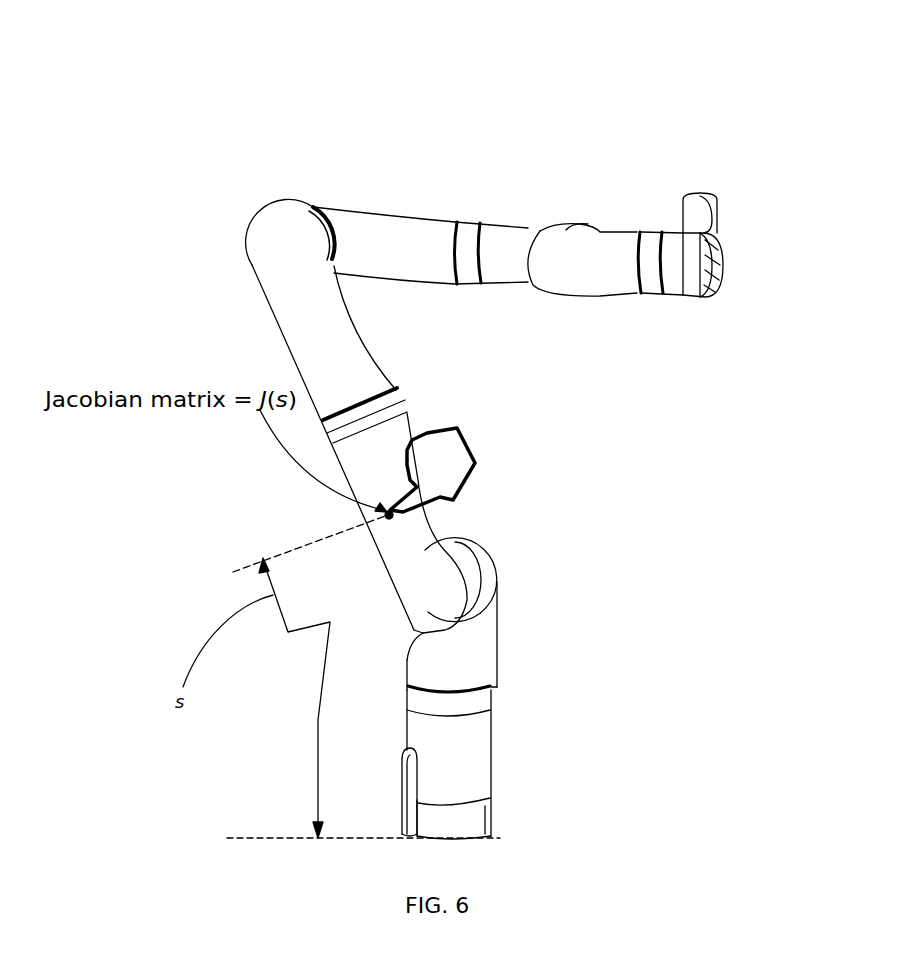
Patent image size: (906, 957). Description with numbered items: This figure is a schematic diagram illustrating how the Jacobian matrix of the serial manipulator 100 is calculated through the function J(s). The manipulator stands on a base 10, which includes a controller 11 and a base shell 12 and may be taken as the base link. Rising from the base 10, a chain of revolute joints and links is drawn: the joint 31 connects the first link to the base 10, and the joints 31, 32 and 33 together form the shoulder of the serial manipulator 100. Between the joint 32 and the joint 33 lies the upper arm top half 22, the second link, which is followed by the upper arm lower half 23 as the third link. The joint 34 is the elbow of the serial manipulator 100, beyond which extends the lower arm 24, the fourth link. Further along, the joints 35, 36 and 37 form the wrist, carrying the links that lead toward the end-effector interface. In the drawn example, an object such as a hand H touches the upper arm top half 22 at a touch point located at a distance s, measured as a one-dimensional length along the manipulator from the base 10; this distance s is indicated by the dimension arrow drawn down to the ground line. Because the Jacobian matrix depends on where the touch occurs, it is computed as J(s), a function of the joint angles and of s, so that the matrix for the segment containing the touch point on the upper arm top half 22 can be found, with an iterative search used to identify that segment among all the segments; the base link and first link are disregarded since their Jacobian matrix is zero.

The serial manipulator 100 is at (508, 84).
The base 10 is at (577, 760).
The controller 11 is at (487, 817).
The base shell 12 is at (477, 758).
The upper arm top half 22 is at (410, 535).
The upper arm lower half 23 is at (268, 237).
The lower arm 24 is at (390, 237).
The joint 31 is at (477, 703).
The joint 32 is at (470, 572).
The joint 33 is at (397, 397).
The joint 34 is at (313, 207).
The joint 35 is at (467, 267).
The joint 36 is at (573, 228).
The joint 37 is at (648, 280).
The hand H is at (450, 453).